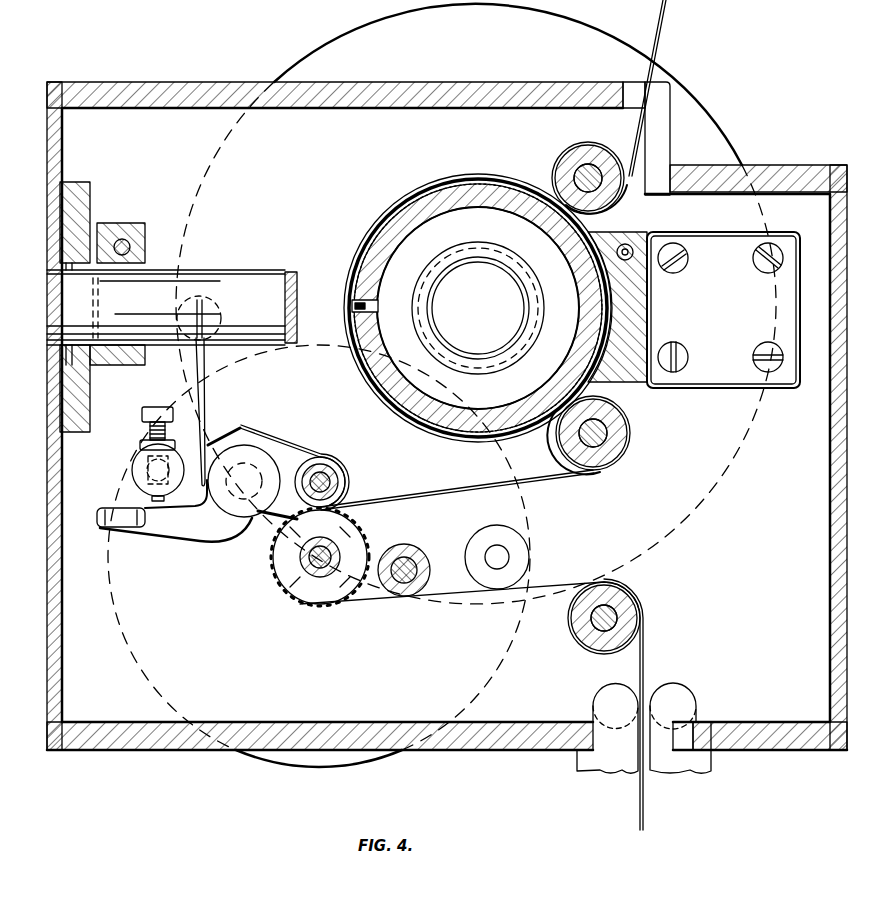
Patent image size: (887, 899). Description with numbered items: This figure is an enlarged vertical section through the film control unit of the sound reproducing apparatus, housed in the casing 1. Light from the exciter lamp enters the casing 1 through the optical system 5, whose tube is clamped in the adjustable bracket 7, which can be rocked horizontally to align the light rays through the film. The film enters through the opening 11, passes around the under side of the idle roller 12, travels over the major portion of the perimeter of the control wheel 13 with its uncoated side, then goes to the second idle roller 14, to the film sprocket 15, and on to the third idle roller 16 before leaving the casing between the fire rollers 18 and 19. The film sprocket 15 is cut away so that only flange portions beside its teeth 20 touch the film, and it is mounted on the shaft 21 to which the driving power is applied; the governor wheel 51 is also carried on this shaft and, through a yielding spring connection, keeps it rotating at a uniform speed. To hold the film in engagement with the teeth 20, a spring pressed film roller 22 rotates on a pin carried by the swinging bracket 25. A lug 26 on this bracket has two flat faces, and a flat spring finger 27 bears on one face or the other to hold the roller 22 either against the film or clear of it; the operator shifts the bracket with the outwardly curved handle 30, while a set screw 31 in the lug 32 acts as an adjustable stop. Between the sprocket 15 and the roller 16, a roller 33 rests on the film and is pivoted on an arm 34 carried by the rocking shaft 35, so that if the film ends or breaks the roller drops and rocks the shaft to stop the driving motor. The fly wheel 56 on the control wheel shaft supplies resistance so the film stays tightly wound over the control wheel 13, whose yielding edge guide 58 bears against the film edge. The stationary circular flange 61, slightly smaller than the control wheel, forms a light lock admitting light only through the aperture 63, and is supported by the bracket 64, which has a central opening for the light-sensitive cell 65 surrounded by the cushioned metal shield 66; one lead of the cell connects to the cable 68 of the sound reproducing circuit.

The casing 1 is at (160, 84).
The optical system 5 is at (213, 270).
The adjustable bracket 7 is at (86, 208).
The opening 11 is at (665, 115).
The idle roller 12 is at (585, 160).
The control wheel 13 is at (404, 182).
The second idle roller 14 is at (632, 432).
The film sprocket 15 is at (352, 540).
The third idle roller 16 is at (642, 604).
The fire roller 18 is at (604, 690).
The fire roller 19 is at (690, 690).
The teeth 20 is at (272, 570).
The shaft 21 is at (316, 566).
The spring pressed film roller 22 is at (346, 478).
The swinging bracket 25 is at (296, 452).
The lug 26 is at (246, 446).
The flat spring finger 27 is at (210, 392).
The handle 30 is at (112, 528).
The set screw 31 is at (146, 433).
The lug 32 is at (136, 470).
The roller 33 is at (410, 548).
The arm 34 is at (470, 536).
The rocking shaft 35 is at (510, 553).
The governor wheel 51 is at (300, 765).
The fly wheel 56 is at (342, 46).
The yielding edge guide 58 is at (380, 212).
The stationary circular flange 61 is at (378, 238).
The aperture 63 is at (352, 310).
The bracket 64 is at (652, 311).
The light-sensitive cell 65 is at (524, 308).
The metal shield 66 is at (528, 338).
The cable 68 is at (628, 245).